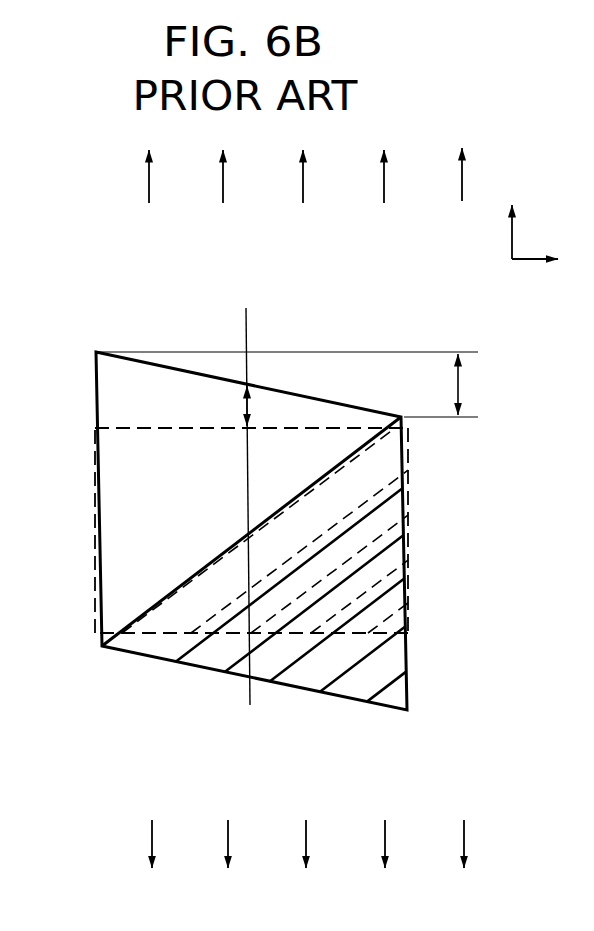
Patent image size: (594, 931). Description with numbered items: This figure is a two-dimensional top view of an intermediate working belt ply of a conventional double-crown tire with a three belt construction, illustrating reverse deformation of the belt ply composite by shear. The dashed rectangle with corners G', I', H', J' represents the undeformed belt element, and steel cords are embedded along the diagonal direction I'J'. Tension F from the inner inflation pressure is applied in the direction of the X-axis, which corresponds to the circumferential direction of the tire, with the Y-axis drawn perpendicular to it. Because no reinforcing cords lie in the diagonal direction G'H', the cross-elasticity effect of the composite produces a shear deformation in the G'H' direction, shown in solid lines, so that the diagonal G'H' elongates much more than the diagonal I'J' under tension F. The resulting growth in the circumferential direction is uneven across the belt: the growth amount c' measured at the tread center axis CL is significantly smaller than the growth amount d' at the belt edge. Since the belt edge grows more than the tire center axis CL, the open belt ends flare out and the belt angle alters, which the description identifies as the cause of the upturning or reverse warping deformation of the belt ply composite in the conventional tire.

The tension F is at (306, 508).
The X-axis X is at (510, 214).
The Y-axis Y is at (546, 256).
The tread center axis CL is at (240, 490).
The growth amount at the tread center axis c' is at (262, 406).
The growth amount of the belt edge d' is at (476, 384).
The corner point of belt ply element G' is at (234, 431).
The corner point of belt ply element I' is at (421, 527).
The corner point of belt ply element H' is at (271, 631).
The corner point of belt ply element J' is at (77, 541).